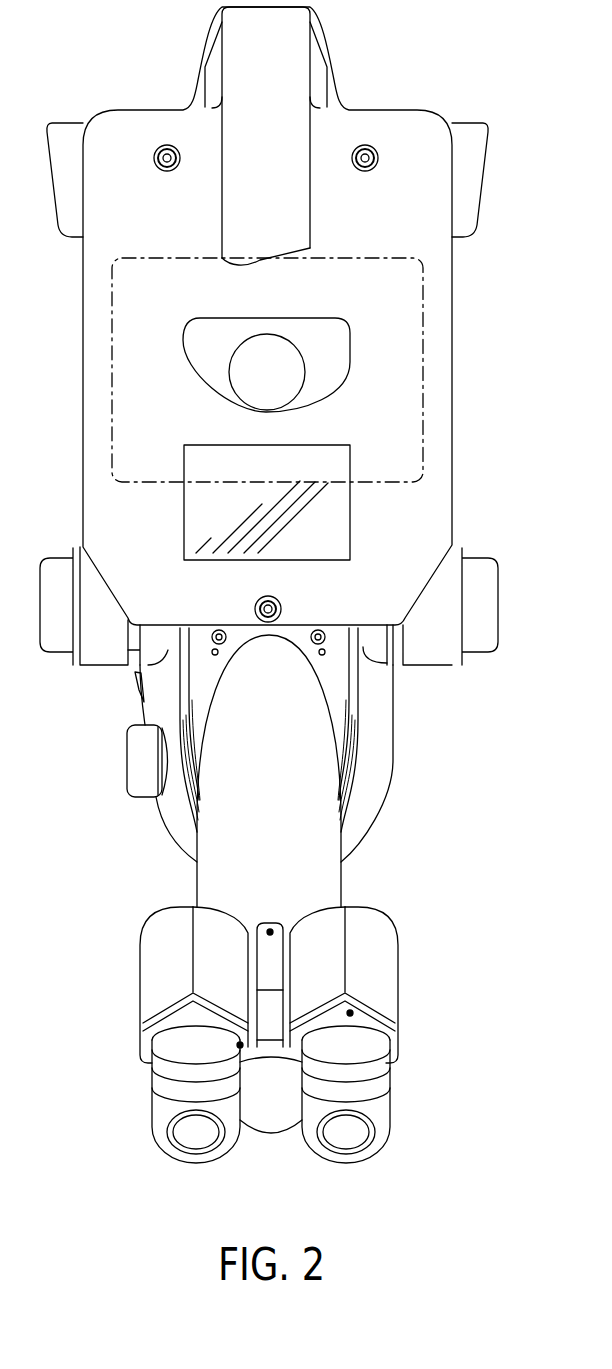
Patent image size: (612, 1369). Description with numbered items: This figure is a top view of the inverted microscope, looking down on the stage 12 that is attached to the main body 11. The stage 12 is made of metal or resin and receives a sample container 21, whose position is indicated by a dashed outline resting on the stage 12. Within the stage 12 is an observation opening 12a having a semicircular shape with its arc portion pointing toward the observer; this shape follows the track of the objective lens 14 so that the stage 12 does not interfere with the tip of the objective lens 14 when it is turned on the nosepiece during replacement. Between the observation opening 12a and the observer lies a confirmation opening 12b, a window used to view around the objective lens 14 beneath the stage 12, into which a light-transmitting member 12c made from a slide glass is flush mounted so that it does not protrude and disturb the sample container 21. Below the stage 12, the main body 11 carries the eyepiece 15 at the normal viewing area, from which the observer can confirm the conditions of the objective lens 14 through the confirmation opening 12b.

The main body 11 is at (390, 763).
The stage 12 is at (440, 252).
The observation opening 12a is at (347, 349).
The confirmation opening 12b is at (350, 552).
The light-transmitting member 12c is at (342, 518).
The objective lens 14 is at (293, 392).
The eyepiece 15 is at (385, 963).
The sample container 21 is at (112, 309).